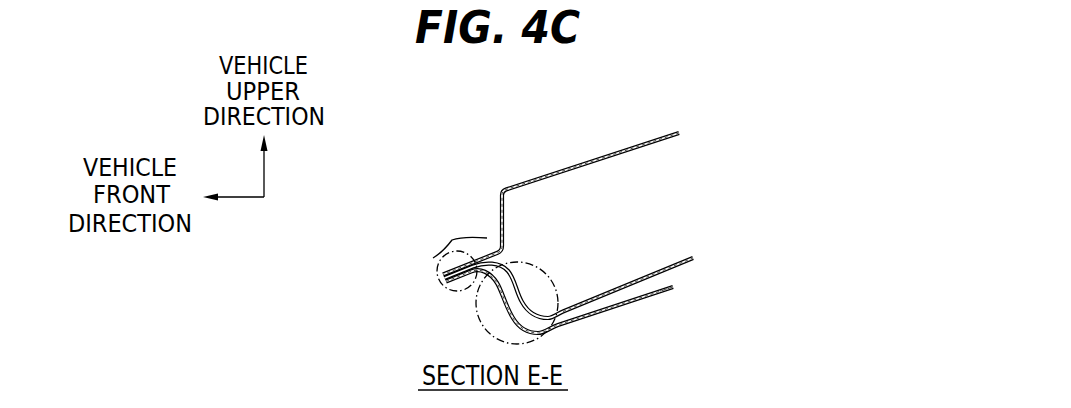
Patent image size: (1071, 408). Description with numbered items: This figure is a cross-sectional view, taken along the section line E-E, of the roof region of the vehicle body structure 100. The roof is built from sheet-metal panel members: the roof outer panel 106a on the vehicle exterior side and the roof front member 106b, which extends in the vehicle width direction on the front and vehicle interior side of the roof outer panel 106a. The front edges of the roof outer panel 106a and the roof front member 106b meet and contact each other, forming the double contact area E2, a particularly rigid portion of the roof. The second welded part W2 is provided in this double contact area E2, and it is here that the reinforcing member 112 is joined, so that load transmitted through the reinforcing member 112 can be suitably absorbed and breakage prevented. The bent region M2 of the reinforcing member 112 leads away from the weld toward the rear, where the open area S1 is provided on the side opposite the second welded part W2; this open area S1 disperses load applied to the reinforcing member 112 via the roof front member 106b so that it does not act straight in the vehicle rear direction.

The vehicle body structure 100 is at (505, 152).
The roof outer panel 106a is at (660, 131).
The roof front member 106b is at (694, 255).
The reinforcing member 112 is at (640, 303).
The open area S1 is at (688, 275).
The double contact area E2 is at (453, 240).
The second welded part W2 is at (437, 270).
The bent portion M2 is at (481, 318).